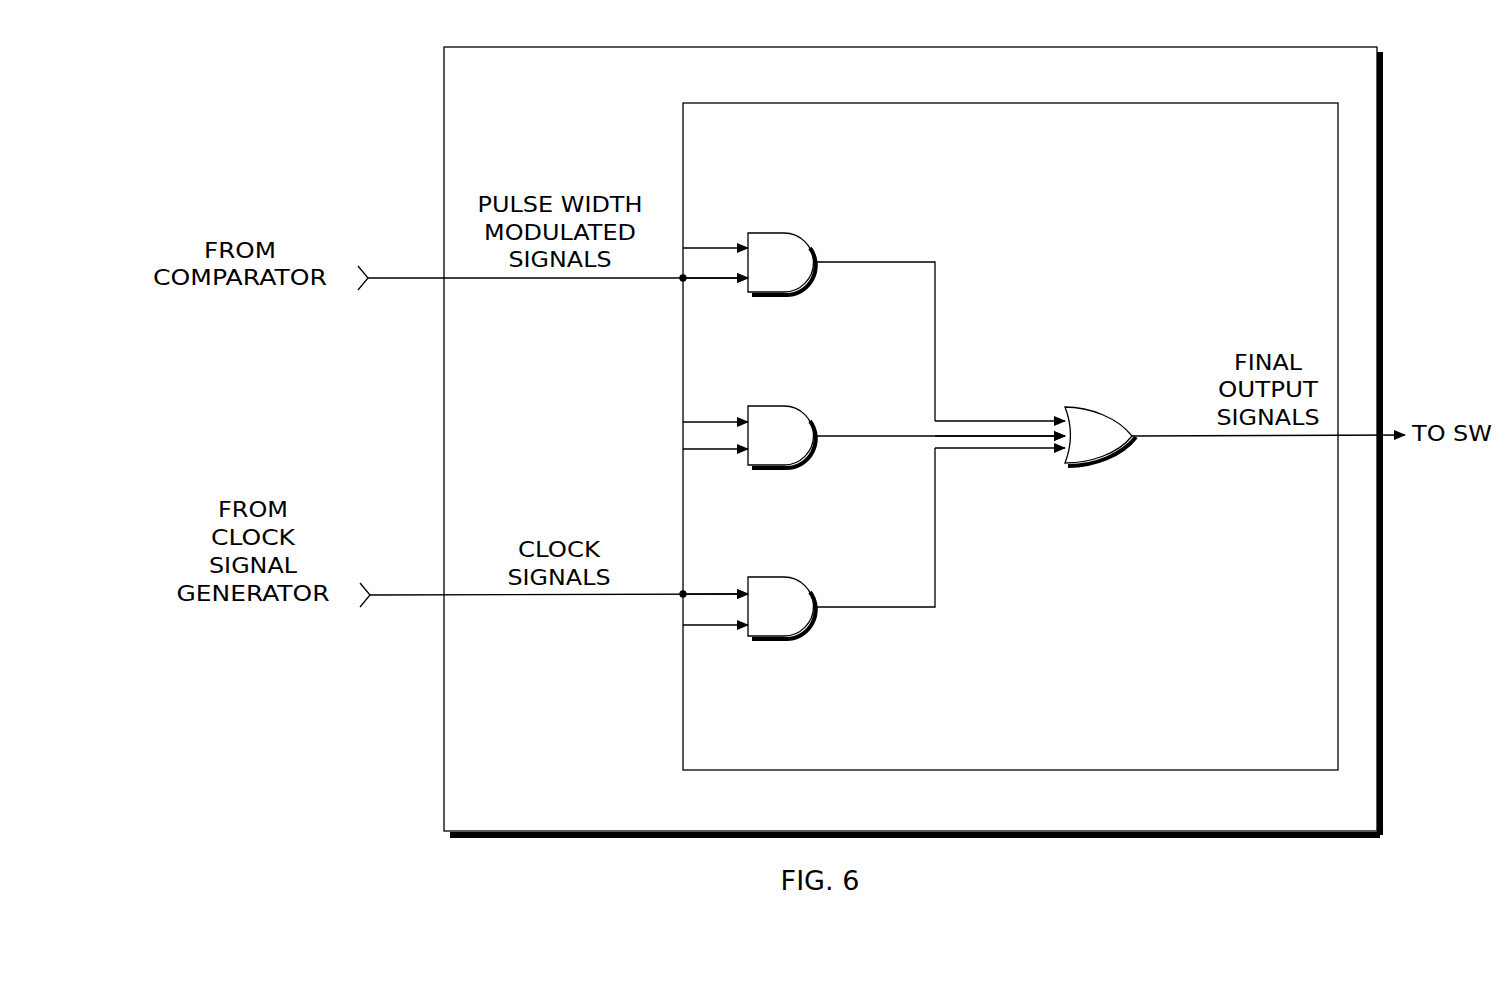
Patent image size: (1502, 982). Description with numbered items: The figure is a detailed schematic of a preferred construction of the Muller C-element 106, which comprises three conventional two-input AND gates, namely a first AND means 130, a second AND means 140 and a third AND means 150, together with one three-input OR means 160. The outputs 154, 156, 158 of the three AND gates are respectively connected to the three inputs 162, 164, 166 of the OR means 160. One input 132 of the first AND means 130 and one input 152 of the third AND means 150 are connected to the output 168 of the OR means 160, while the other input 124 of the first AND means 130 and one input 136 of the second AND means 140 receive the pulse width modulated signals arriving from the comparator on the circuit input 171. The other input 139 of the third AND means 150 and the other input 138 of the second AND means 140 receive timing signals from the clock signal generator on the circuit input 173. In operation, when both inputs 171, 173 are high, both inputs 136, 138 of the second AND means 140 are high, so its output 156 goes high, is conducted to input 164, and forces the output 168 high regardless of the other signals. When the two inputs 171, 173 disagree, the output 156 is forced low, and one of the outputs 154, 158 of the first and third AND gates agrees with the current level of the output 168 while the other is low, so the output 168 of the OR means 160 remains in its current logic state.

The Muller C-element 106 is at (515, 810).
The pulse width modulated signal input to first AND gate 124 is at (708, 280).
The first AND means 130 is at (806, 240).
The input of the first AND means 132 is at (708, 246).
The input of the second AND means 136 is at (708, 420).
The other input of the second AND means 138 is at (708, 452).
The other input of the third AND means 139 is at (708, 590).
The second AND means 140 is at (806, 412).
The third AND means 150 is at (806, 585).
The input of the third AND means 152 is at (708, 628).
The output of the first AND means 154 is at (903, 262).
The output of the second AND means 156 is at (815, 441).
The output of the third AND means 158 is at (843, 608).
The OR means 160 is at (1104, 464).
The input of the OR means 162 is at (986, 420).
The input of the OR means 164 is at (1016, 434).
The input of the OR means 166 is at (1008, 450).
The output of the OR means 168 is at (1186, 434).
The input of the circuit 171 is at (413, 278).
The input of the circuit 173 is at (412, 595).